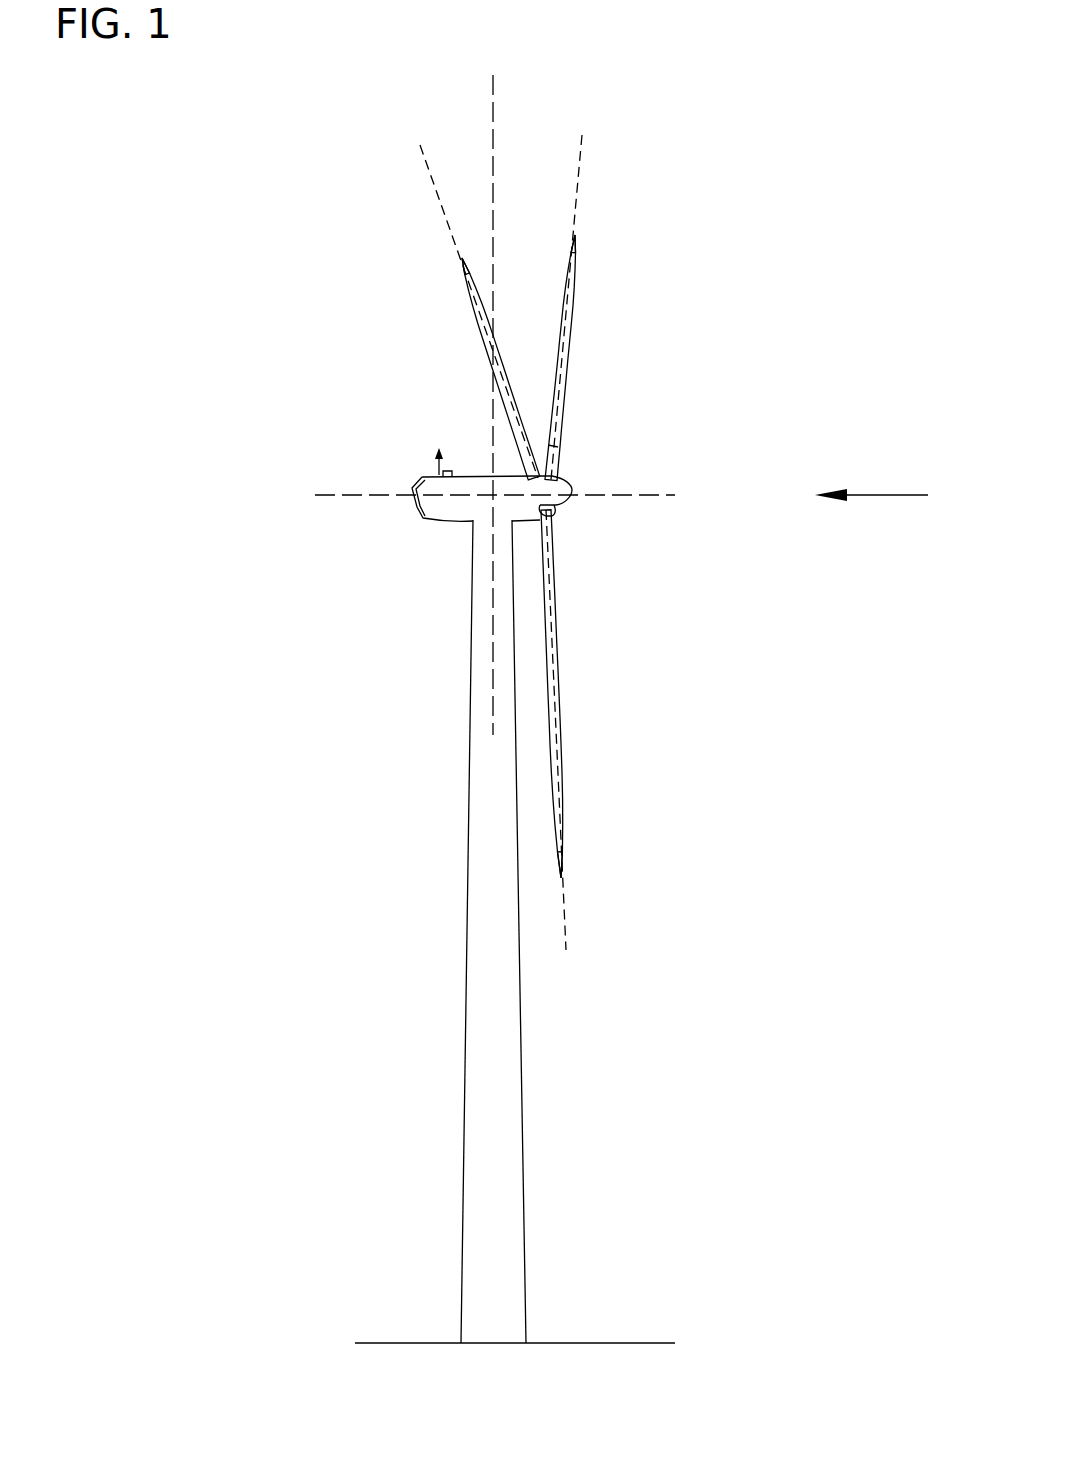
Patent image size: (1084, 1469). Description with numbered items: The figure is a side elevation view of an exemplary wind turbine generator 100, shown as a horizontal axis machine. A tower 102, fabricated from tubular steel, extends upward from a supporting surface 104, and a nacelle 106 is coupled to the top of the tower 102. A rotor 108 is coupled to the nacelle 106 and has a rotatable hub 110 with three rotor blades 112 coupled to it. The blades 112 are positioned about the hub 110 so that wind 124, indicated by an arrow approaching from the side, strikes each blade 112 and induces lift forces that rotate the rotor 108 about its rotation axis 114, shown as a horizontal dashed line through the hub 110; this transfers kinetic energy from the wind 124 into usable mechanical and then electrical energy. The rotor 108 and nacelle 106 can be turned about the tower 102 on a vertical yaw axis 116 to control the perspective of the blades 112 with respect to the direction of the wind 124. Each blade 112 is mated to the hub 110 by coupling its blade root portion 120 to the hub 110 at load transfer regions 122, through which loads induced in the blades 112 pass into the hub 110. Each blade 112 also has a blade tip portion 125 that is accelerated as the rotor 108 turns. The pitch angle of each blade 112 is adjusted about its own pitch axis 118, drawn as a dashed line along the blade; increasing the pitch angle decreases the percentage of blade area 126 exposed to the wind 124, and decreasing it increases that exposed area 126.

The wind turbine generator 100 is at (235, 275).
The tower 102 is at (464, 1090).
The supporting surface 104 is at (418, 1342).
The nacelle 106 is at (445, 520).
The rotor 108 is at (524, 540).
The rotatable hub 110 is at (563, 490).
The rotor blades 112 is at (490, 333).
The rotation axis 114 is at (640, 498).
The yaw axis 116 is at (494, 100).
The pitch axis 118 is at (428, 178).
The blade root portion 120 is at (557, 578).
The load transfer regions 122 is at (548, 518).
The wind 124 is at (890, 493).
The blade tip portion 125 is at (463, 266).
The area 126 is at (558, 444).